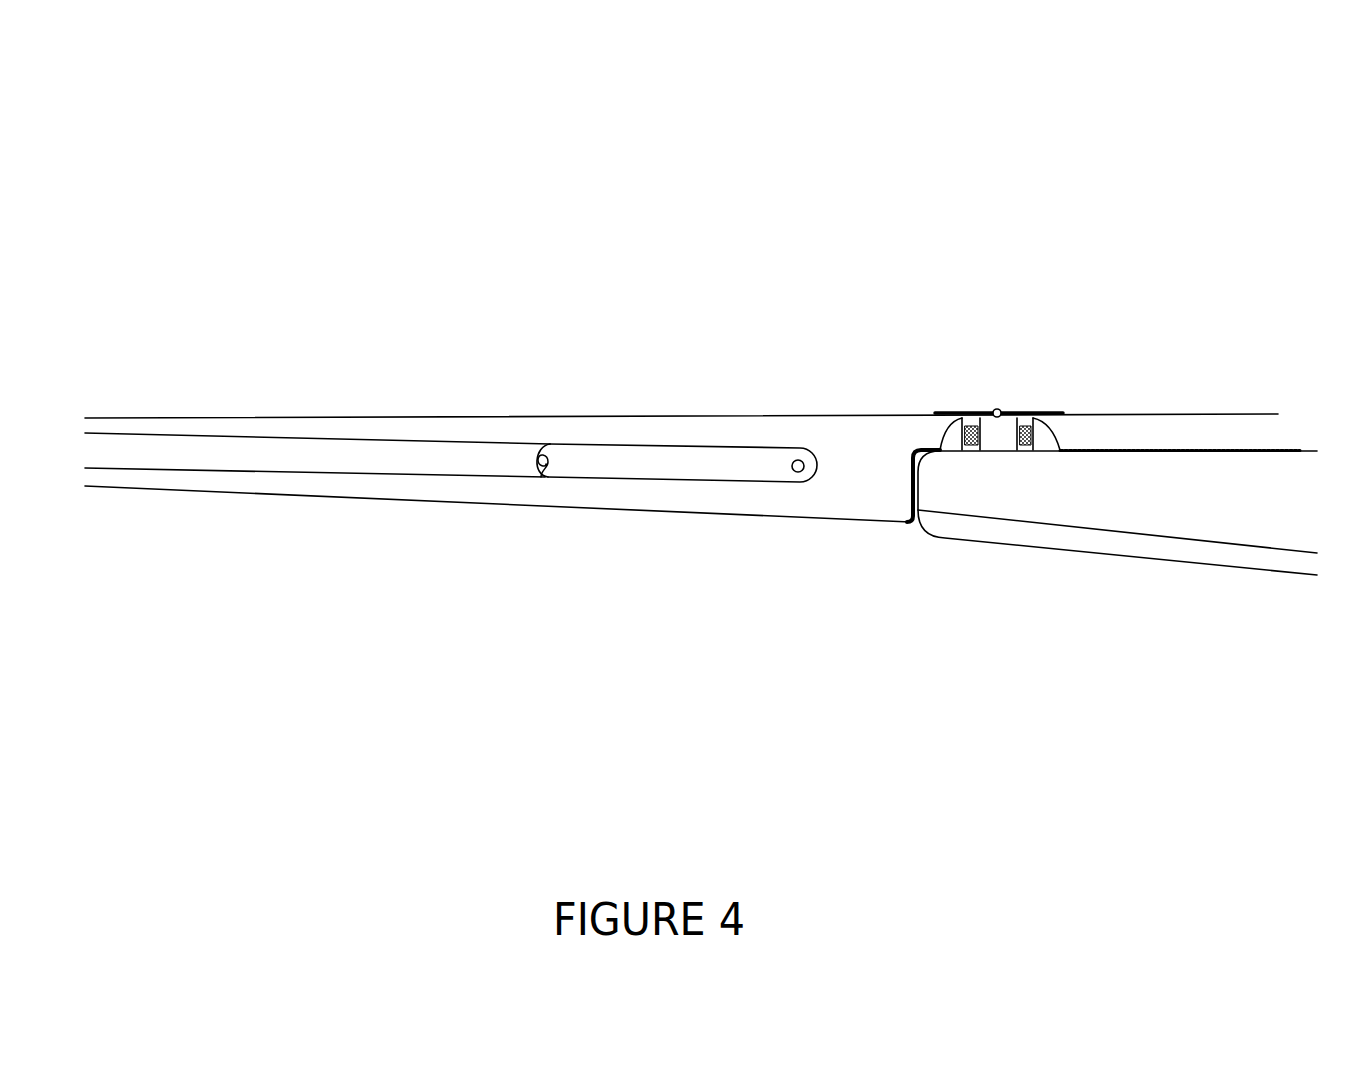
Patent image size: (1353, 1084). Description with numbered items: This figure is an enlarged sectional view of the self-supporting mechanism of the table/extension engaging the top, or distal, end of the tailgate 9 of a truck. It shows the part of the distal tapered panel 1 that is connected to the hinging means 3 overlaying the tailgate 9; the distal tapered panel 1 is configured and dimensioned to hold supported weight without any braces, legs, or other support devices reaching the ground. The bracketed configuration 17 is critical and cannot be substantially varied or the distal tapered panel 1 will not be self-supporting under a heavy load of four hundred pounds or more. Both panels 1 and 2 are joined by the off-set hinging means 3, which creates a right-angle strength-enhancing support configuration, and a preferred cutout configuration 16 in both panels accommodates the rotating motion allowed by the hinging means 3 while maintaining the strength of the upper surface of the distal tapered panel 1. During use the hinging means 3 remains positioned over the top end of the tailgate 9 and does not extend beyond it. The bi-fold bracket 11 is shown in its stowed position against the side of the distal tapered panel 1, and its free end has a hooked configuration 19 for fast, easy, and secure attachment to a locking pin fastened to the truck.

The distal tapered panel 1 is at (772, 537).
The panel 2 is at (1207, 398).
The hinging means 3 is at (960, 379).
The tailgate 9 is at (1147, 517).
The bi-fold bracket 11 is at (637, 431).
The cutout configuration 16 is at (877, 529).
The bracketed configuration 17 is at (909, 396).
The hooked configuration 19 is at (510, 491).